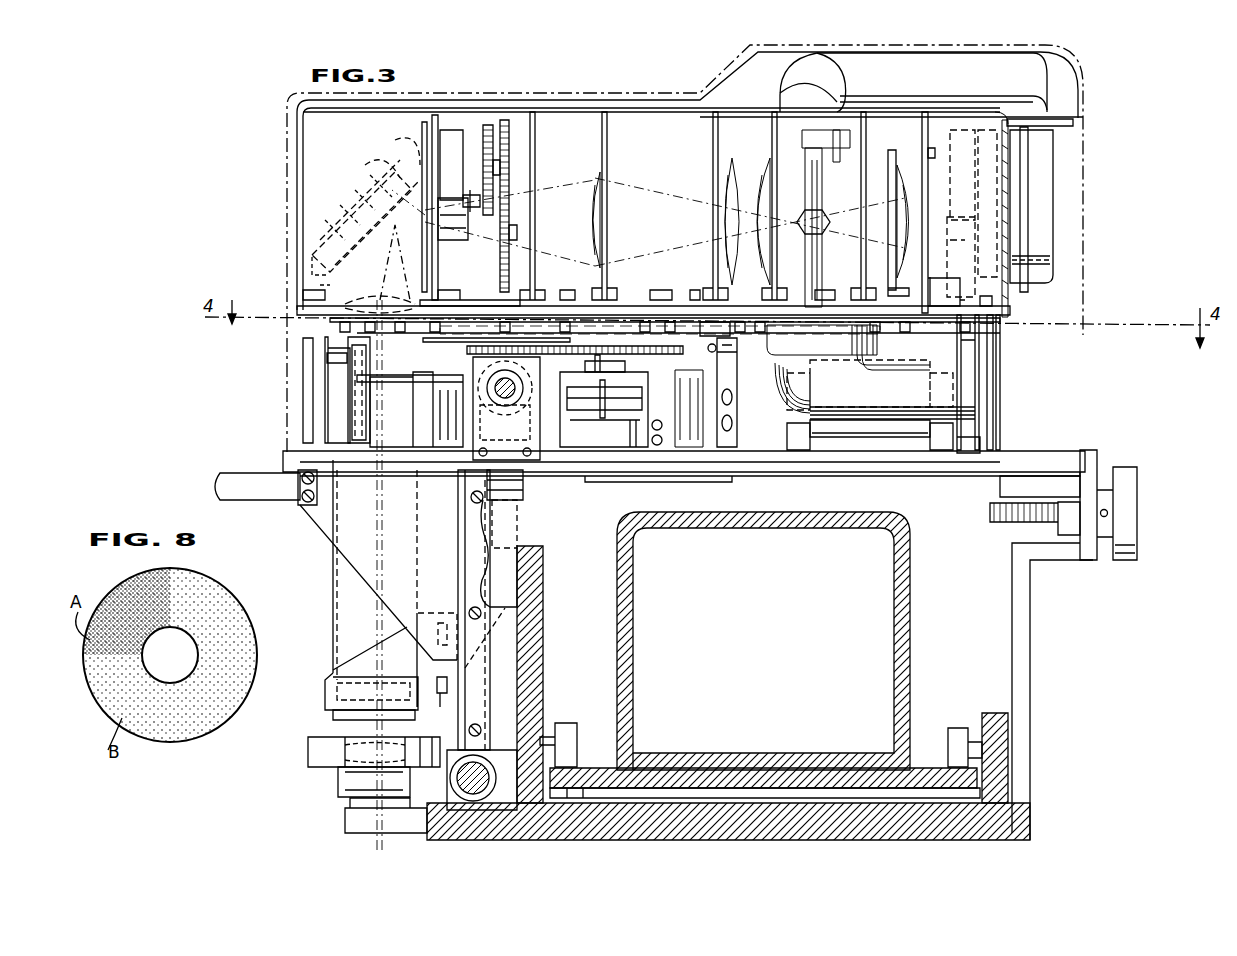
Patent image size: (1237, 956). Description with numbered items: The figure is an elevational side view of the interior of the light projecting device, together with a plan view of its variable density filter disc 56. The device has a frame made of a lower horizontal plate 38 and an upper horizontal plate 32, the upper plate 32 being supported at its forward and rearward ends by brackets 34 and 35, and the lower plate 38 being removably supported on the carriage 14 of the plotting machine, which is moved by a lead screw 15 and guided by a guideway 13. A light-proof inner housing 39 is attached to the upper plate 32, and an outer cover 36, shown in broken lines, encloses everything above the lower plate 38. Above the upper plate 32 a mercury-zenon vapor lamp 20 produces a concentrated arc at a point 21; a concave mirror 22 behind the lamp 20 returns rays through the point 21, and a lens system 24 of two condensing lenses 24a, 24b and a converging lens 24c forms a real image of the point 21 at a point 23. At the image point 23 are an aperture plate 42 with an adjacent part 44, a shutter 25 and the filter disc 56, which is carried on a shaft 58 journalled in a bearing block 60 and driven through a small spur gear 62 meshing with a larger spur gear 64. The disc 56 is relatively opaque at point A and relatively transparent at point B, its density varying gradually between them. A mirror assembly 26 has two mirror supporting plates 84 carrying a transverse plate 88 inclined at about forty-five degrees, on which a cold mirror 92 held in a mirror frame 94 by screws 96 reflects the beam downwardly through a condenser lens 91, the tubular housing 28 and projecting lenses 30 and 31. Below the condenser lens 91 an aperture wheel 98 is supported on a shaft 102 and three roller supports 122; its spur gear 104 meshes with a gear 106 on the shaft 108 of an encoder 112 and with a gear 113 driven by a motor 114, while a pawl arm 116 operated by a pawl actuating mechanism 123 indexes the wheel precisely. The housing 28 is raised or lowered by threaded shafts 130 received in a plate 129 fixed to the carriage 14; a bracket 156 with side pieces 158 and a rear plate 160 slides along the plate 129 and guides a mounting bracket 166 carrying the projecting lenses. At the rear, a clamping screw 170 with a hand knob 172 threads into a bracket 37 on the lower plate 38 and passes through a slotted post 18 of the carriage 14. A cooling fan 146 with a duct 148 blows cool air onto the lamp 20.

In FIG. 3, the guideway 13 is at (920, 768).
In FIG. 3, the carriage 14 is at (535, 655).
In FIG. 3, the lead screw 15 is at (452, 788).
In FIG. 3, the post 18 is at (1027, 648).
In FIG. 3, the mercury-zenon vapor lamp 20 is at (808, 175).
In FIG. 3, the point 21 is at (820, 222).
In FIG. 3, the concave mirror 22 is at (893, 245).
In FIG. 3, the real image point 23 is at (410, 220).
In FIG. 3, the lens system 24 is at (693, 144).
In FIG. 3, the condensing lens 24a is at (748, 200).
In FIG. 3, the condensing lens 24b is at (722, 240).
In FIG. 3, the converging lens 24c is at (590, 215).
In FIG. 3, the shutter 25 is at (452, 238).
In FIG. 3, the mirror assembly 26 is at (282, 223).
In FIG. 3, the tubular housing 28 is at (345, 598).
In FIG. 3, the projecting lens 30 is at (345, 736).
In FIG. 3, the projecting lens 31 is at (338, 793).
In FIG. 3, the upper horizontal plate 32 is at (298, 307).
In FIG. 3, the bracket 34 is at (298, 386).
In FIG. 3, the bracket 35 is at (994, 340).
In FIG. 3, the outer cover 36 is at (286, 125).
In FIG. 3, the bracket 37 is at (1000, 480).
In FIG. 3, the lower horizontal plate 38 is at (283, 450).
In FIG. 3, the inner housing 39 is at (553, 106).
In FIG. 3, the aperture plate 42 is at (435, 115).
In FIG. 3, the support foot 44 is at (442, 287).
In FIG. 3, the variable density filter disc 56 is at (422, 137).
In FIG. 8, the variable density filter disc 56 is at (220, 590).
In FIG. 3, the shaft 58 is at (467, 188).
In FIG. 3, the bearing block 60 is at (488, 125).
In FIG. 3, the small spur gear 62 is at (471, 208).
In FIG. 3, the spur gear 64 is at (505, 123).
In FIG. 3, the mirror supporting plates 84 is at (355, 288).
In FIG. 3, the transverse plate 88 is at (325, 230).
In FIG. 3, the condenser lens 91 is at (370, 310).
In FIG. 3, the mirror 92 is at (400, 232).
In FIG. 3, the mirror frame 94 is at (397, 146).
In FIG. 3, the screws 96 is at (371, 163).
In FIG. 3, the aperture wheel 98 is at (560, 322).
In FIG. 3, the shaft 102 is at (478, 340).
In FIG. 3, the spur gear 104 is at (470, 356).
In FIG. 3, the second spur gear 106 is at (645, 332).
In FIG. 3, the shaft 108 is at (600, 376).
In FIG. 3, the encoder 112 is at (580, 442).
In FIG. 3, the second spur gear 113 is at (716, 350).
In FIG. 3, the motor 114 is at (690, 420).
In FIG. 3, the pawl arm 116 is at (300, 328).
In FIG. 3, the roller supports 122 is at (312, 376).
In FIG. 3, the pawl actuating mechanism 123 is at (302, 412).
In FIG. 3, the plate 129 is at (502, 590).
In FIG. 3, the threaded shaft 130 is at (520, 532).
In FIG. 3, the cooling fan 146 is at (1050, 240).
In FIG. 3, the duct 148 is at (1050, 92).
In FIG. 3, the bracket 156 is at (305, 517).
In FIG. 3, the side pieces 158 is at (355, 548).
In FIG. 3, the rear plate 160 is at (490, 575).
In FIG. 3, the mounting bracket 166 is at (345, 672).
In FIG. 3, the clamping screw 170 is at (1000, 522).
In FIG. 3, the hand knob 172 is at (1130, 482).